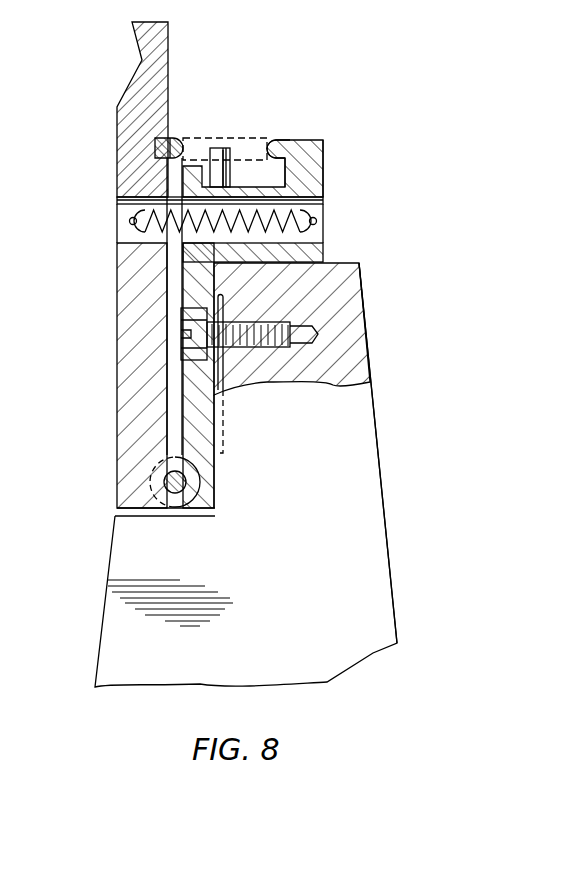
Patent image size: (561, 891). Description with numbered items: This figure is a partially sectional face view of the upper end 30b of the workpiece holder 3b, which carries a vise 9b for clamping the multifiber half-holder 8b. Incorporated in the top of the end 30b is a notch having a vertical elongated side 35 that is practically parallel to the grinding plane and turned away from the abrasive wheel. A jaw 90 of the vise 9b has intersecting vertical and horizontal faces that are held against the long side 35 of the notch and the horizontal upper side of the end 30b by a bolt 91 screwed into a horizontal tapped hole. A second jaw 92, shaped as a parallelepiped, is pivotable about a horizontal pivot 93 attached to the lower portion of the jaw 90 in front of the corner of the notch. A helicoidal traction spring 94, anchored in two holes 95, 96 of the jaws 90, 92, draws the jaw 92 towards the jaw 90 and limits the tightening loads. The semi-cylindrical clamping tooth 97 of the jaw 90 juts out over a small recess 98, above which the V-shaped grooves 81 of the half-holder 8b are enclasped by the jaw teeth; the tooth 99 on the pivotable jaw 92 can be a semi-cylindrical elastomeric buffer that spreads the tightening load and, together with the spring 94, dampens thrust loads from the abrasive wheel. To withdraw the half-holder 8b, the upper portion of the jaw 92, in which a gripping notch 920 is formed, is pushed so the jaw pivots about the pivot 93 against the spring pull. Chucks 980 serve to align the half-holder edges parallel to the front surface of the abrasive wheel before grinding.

The workpiece holder 3b is at (298, 565).
The upper end of workpiece holder 30b is at (358, 405).
The vertical elongated side of notch 35 is at (218, 280).
The bolt 91 is at (250, 348).
The vise 9b is at (328, 76).
The gripping notch 920 is at (140, 46).
The second jaw 92 is at (117, 370).
The semi-cylindrical tooth 99 is at (155, 147).
The half-holder 8b is at (237, 138).
The V-shaped grooves 81 is at (197, 137).
The jaw 90 is at (318, 153).
The clamping tooth 97 is at (272, 143).
The chucks 980 is at (300, 167).
The small recess 98 is at (227, 175).
The helicoidal traction spring 94 is at (323, 214).
The hole 96 is at (120, 240).
The hole 95 is at (318, 243).
The horizontal pivot 93 is at (180, 495).